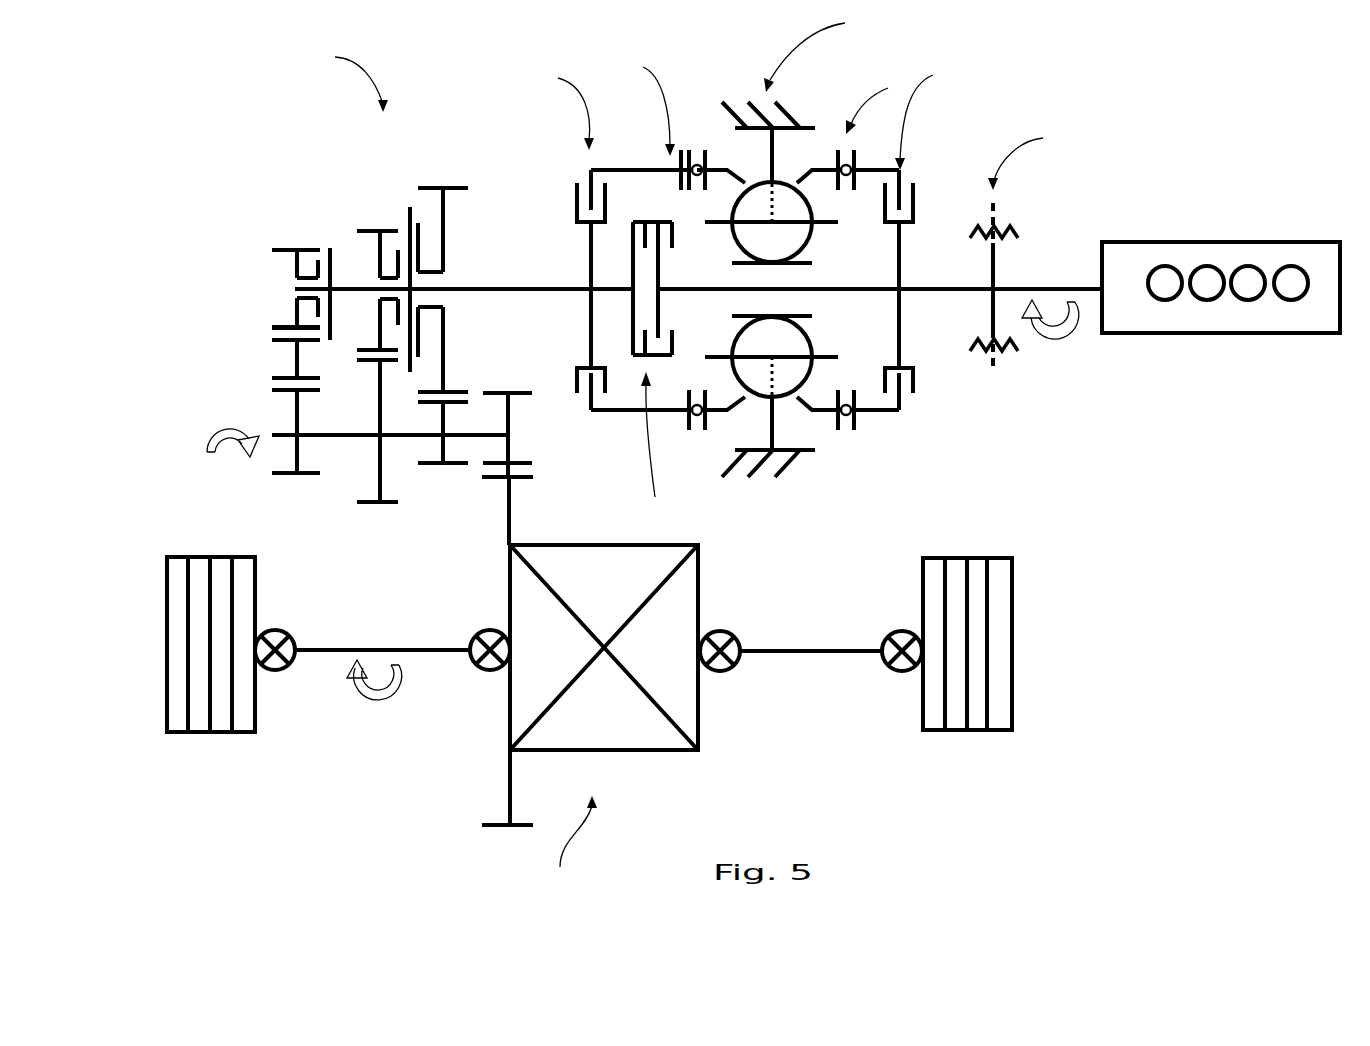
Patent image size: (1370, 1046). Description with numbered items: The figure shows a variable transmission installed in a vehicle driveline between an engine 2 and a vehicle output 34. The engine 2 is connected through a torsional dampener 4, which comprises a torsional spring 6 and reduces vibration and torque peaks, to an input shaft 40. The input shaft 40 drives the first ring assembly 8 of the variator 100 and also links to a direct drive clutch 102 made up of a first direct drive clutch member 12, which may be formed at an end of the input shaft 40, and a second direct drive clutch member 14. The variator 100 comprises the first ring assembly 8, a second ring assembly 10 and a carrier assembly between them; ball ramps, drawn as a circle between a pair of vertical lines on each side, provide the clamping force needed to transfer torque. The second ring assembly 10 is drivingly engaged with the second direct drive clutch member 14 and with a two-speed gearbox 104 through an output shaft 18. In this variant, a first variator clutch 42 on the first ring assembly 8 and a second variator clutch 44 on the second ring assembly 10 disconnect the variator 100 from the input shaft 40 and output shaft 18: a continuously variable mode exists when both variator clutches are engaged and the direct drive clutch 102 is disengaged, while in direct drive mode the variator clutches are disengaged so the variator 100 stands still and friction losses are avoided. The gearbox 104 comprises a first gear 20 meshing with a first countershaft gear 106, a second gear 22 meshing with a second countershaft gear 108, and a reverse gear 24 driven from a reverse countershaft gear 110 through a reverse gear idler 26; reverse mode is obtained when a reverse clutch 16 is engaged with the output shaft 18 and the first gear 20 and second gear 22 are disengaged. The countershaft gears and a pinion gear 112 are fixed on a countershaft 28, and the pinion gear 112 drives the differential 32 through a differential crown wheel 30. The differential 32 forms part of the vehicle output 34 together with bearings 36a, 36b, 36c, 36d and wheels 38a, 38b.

The engine 2 is at (1222, 240).
The torsional dampener 4 is at (1026, 250).
The torsional spring 6 is at (1012, 225).
The first ring assembly 8 is at (848, 243).
The second ring assembly 10 is at (679, 243).
The first direct drive clutch member 12 is at (658, 307).
The second direct drive clutch member 14 is at (627, 223).
The reverse clutch 16 is at (330, 248).
The output shaft 18 is at (520, 287).
The first gear 20 is at (457, 187).
The second gear 22 is at (380, 228).
The reverse gear 24 is at (282, 248).
The reverse gear idler 26 is at (292, 365).
The countershaft 28 is at (346, 437).
The differential crown wheel 30 is at (510, 515).
The differential 32 is at (623, 750).
The vehicle output 34 is at (588, 766).
The bearing 36a is at (293, 633).
The bearing 36b is at (485, 630).
The bearing 36c is at (730, 628).
The bearing 36d is at (888, 630).
The wheel 38a is at (187, 555).
The wheel 38b is at (965, 558).
The input shaft 40 is at (1055, 285).
The first variator clutch 42 is at (908, 239).
The second variator clutch 44 is at (607, 238).
The variator 100 is at (799, 248).
The direct drive clutch 102 is at (674, 437).
The two-speed gearbox 104 is at (339, 82).
The first countershaft gear 106 is at (445, 465).
The second countershaft gear 108 is at (367, 510).
The reverse countershaft gear 110 is at (287, 475).
The pinion gear 112 is at (510, 413).